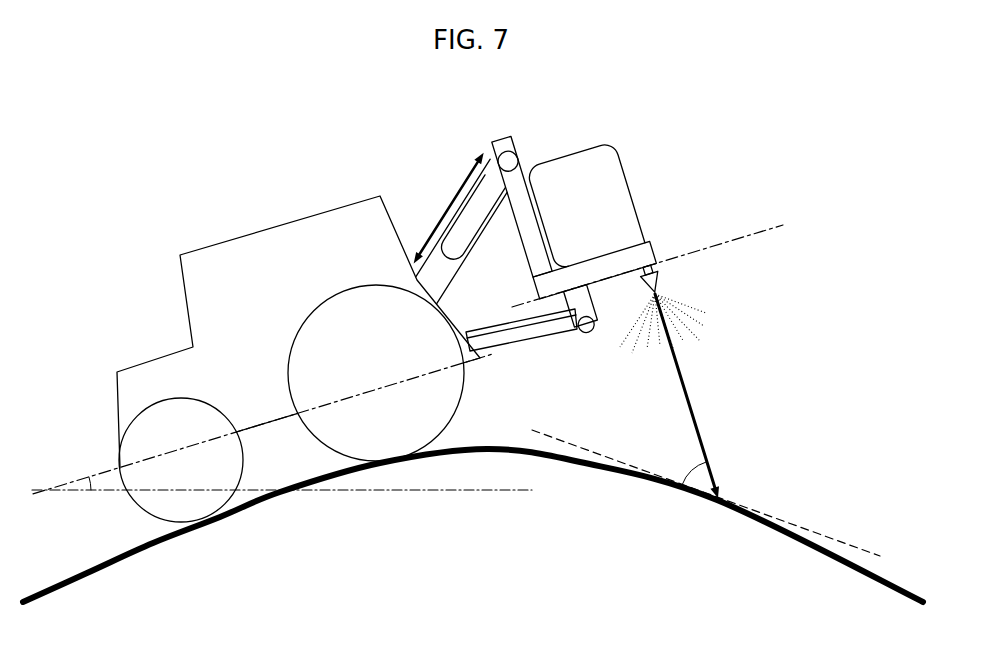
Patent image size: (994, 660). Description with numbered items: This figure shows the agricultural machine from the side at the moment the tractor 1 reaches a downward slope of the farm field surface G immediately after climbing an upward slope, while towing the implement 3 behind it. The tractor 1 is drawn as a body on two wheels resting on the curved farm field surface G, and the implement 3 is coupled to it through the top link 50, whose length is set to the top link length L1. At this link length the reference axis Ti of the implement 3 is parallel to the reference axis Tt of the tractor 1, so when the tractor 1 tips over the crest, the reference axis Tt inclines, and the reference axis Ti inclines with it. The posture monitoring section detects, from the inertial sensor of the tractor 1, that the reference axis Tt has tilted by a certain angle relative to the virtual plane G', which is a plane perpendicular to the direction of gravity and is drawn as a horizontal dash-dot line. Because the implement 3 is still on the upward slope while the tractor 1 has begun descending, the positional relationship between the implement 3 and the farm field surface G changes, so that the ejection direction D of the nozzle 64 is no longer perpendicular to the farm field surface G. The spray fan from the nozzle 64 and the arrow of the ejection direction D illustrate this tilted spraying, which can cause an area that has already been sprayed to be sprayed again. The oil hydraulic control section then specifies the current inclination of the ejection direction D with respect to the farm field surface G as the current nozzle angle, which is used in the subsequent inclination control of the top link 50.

The tractor 1 is at (278, 226).
The implement 3 is at (558, 212).
The top link 50 is at (492, 214).
The nozzle 64 is at (661, 284).
The top link length L1 is at (448, 208).
The reference axis of the tractor Tt is at (65, 480).
The reference axis of the implement Ti is at (774, 226).
The ejection direction D is at (688, 396).
The farm field surface G is at (473, 525).
The virtual plane G' is at (282, 523).